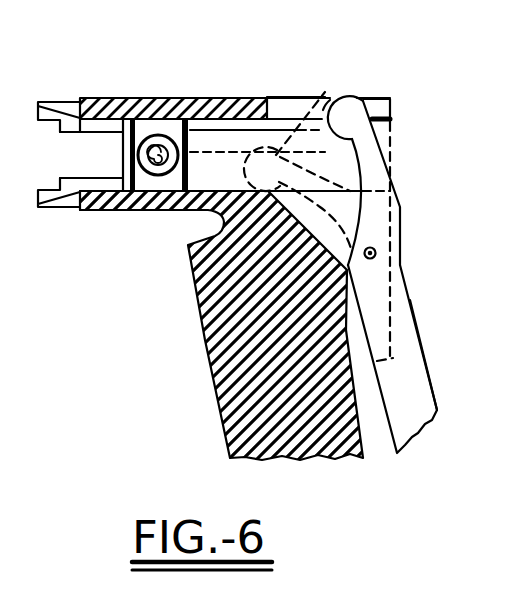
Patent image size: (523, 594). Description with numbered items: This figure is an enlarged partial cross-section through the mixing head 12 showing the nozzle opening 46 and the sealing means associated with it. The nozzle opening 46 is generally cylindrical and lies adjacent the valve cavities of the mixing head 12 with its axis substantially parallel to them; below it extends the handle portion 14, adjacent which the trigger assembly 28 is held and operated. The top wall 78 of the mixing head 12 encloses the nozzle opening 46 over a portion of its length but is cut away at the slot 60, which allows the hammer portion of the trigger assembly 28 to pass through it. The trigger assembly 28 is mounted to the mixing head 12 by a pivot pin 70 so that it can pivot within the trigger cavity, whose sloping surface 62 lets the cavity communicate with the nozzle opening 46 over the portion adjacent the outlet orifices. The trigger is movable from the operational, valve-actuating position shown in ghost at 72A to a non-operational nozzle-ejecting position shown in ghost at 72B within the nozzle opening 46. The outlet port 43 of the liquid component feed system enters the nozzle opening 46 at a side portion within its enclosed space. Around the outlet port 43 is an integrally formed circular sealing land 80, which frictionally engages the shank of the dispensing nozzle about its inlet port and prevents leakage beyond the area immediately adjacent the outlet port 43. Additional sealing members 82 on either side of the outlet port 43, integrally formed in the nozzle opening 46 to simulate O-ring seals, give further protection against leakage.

The mixing head 12 is at (198, 99).
The handle portion 14 is at (204, 360).
The trigger assembly 28 is at (423, 355).
The outlet port 43 is at (156, 132).
The nozzle opening 46 is at (391, 127).
The slot 60 is at (326, 100).
The sloping surface 62 is at (401, 197).
The pivot pin 70 is at (376, 253).
The hammer portion in operational valve-actuating position 72A is at (360, 104).
The hammer portion in nozzle ejecting position 72B is at (322, 93).
The top wall 78 is at (258, 97).
The sealing land 80 is at (156, 177).
The sealing members 82 is at (123, 158).